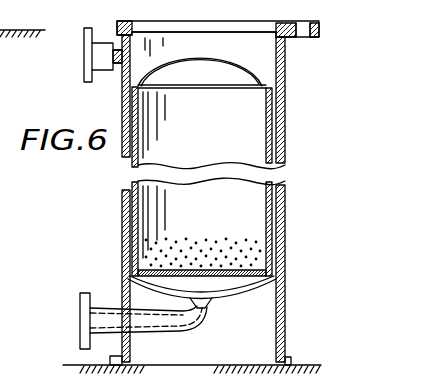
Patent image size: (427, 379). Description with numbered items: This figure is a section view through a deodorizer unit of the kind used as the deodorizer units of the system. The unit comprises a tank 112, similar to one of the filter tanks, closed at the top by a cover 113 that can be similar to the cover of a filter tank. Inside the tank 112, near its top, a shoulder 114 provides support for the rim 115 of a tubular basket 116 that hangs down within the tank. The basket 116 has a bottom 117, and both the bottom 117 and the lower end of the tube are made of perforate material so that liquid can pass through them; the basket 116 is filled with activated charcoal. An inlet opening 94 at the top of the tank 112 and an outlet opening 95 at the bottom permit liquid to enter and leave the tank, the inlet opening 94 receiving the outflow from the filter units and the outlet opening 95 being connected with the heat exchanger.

The cover 113 is at (257, 15).
The tank 112 is at (123, 200).
The tubular basket 116 is at (284, 152).
The shoulder 114 is at (270, 101).
The rim 115 is at (260, 88).
The bottom 117 is at (238, 270).
The inlet opening 94 is at (106, 70).
The outlet opening 95 is at (103, 308).